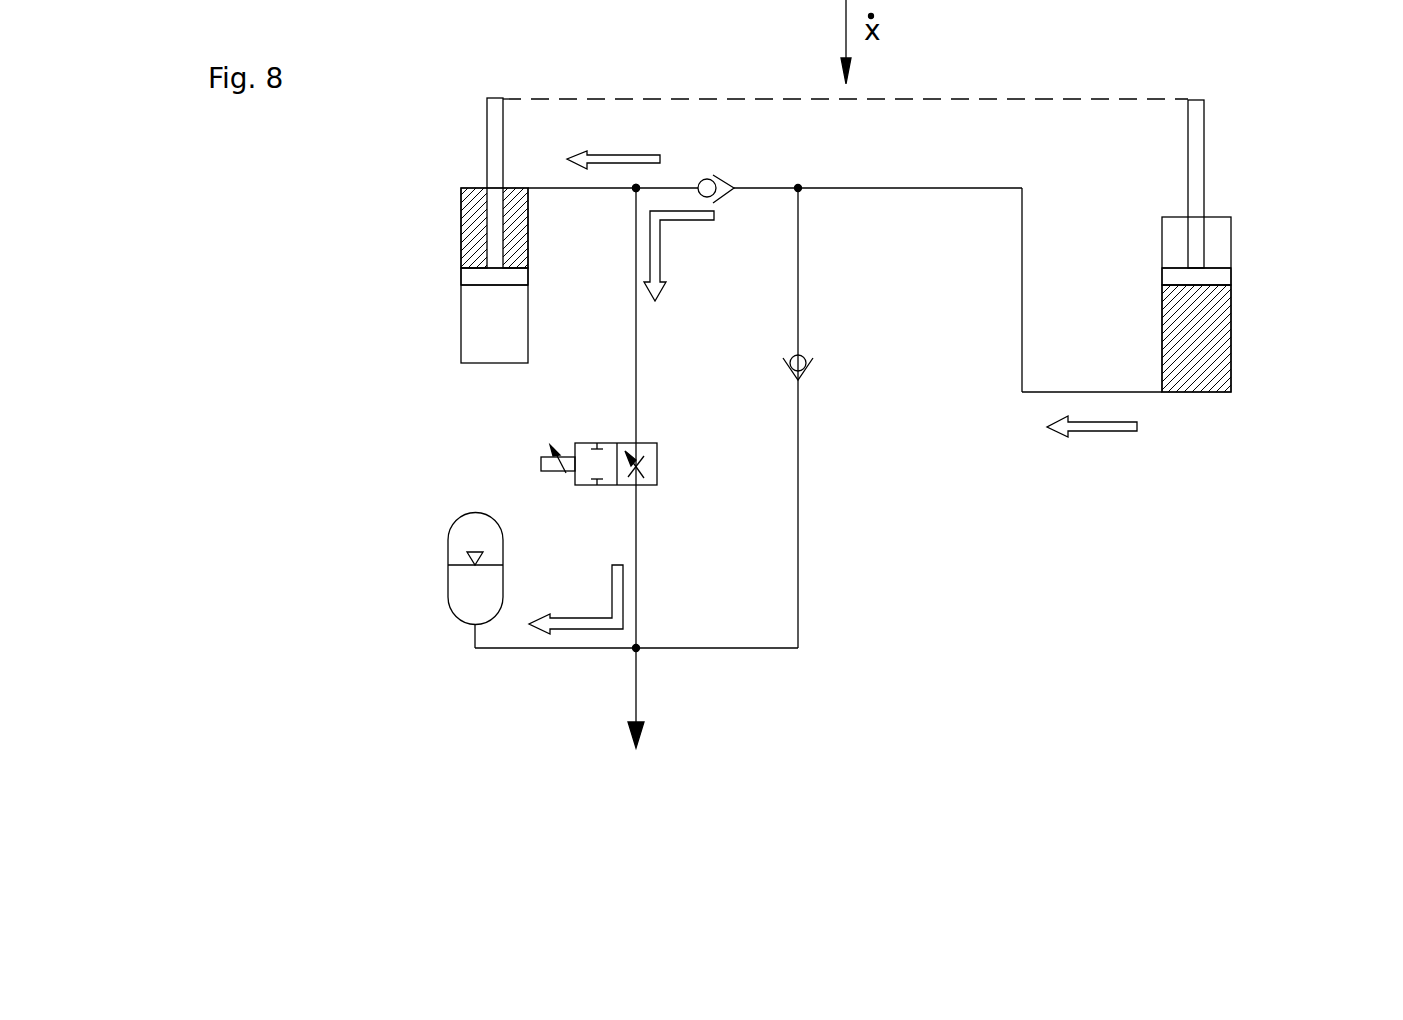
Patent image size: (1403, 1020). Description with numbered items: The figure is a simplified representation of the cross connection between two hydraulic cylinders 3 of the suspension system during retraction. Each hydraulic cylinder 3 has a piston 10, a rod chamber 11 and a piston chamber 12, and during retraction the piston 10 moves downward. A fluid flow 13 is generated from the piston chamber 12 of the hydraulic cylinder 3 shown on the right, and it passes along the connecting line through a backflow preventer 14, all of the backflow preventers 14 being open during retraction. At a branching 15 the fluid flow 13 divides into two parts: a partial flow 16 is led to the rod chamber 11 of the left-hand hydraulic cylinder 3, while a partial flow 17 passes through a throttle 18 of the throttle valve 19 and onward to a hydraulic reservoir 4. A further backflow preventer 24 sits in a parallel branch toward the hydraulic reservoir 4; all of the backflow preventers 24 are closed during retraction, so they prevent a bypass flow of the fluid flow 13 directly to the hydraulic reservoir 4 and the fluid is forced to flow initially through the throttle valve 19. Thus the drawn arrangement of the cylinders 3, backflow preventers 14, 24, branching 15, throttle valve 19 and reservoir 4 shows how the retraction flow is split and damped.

The hydraulic cylinder 3 is at (420, 338).
The hydraulic reservoir 4 is at (422, 540).
The piston 10 is at (494, 115).
The rod chamber 11 is at (470, 228).
The piston chamber 12 is at (487, 350).
The fluid flow 13 is at (1092, 427).
The backflow preventer 14 is at (710, 178).
The branching 15 is at (633, 190).
The partial flow 16 is at (614, 148).
The partial flow 17 is at (580, 628).
The throttle 18 is at (636, 465).
The throttle valve 19 is at (685, 449).
The backflow preventer 24 is at (790, 357).